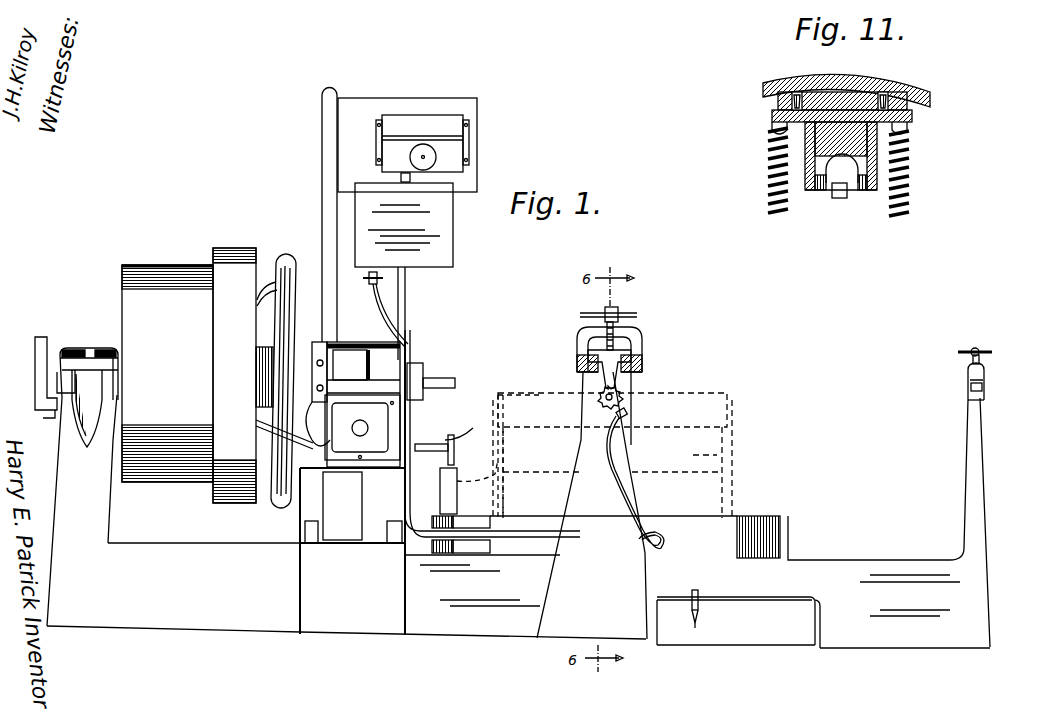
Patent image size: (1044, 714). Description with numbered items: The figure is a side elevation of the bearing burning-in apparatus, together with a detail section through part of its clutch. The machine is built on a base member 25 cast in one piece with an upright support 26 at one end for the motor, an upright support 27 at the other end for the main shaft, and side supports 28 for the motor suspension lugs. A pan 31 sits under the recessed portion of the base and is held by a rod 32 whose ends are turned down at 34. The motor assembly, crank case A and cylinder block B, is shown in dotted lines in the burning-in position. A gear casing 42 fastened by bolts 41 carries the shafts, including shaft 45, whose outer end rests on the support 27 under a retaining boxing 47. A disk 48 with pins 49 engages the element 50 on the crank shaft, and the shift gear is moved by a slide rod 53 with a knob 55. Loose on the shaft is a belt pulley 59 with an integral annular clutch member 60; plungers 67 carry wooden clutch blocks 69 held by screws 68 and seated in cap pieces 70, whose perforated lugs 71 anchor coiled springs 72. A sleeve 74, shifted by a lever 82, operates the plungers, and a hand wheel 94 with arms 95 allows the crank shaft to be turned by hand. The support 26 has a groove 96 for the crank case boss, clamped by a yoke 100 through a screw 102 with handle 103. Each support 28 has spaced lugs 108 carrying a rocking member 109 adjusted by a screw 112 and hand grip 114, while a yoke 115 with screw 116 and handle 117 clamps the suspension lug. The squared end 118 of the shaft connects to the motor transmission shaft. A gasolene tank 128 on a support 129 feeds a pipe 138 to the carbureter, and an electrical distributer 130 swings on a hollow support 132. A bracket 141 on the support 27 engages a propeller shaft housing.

In FIG. 1, the base member 25 is at (491, 620).
In FIG. 1, the upright support 26 is at (988, 503).
In FIG. 1, the upright support 27 is at (173, 510).
In FIG. 1, the support 28 is at (580, 570).
In FIG. 1, the pan 31 is at (757, 628).
In FIG. 1, the rod 32 is at (695, 589).
In FIG. 1, the turned-down ends of rod 34 is at (695, 626).
In FIG. 1, the bolts 41 is at (393, 541).
In FIG. 1, the gear casing 42 is at (293, 520).
In FIG. 1, the shaft 45 is at (306, 357).
In FIG. 1, the retaining boxing 47 is at (105, 348).
In FIG. 1, the disk 48 is at (440, 492).
In FIG. 1, the pins 49 is at (456, 475).
In FIG. 1, the element on crank shaft 50 is at (498, 457).
In FIG. 1, the slide rod 53 is at (415, 448).
In FIG. 1, the knob 55 is at (448, 441).
In FIG. 1, the belt pulley 59 is at (172, 266).
In FIG. 1, the annular clutch member 60 is at (228, 250).
In FIG. 11, the plunger 67 is at (858, 190).
In FIG. 11, the screws 68 is at (886, 94).
In FIG. 11, the wooden clutch block 69 is at (852, 92).
In FIG. 11, the cap piece 70 is at (820, 86).
In FIG. 11, the perforated lugs 71 is at (772, 119).
In FIG. 11, the coiled springs 72 is at (768, 182).
In FIG. 1, the sleeve 74 is at (257, 372).
In FIG. 1, the lever 82 is at (322, 160).
In FIG. 1, the hand wheel 94 is at (286, 258).
In FIG. 1, the arms 95 is at (262, 288).
In FIG. 1, the groove 96 is at (967, 395).
In FIG. 1, the yoke 100 is at (986, 362).
In FIG. 1, the screw 102 is at (968, 362).
In FIG. 1, the handle 103 is at (975, 349).
In FIG. 1, the spaced lugs 108 is at (588, 362).
In FIG. 1, the rocking member 109 is at (612, 360).
In FIG. 1, the screw 112 is at (624, 410).
In FIG. 1, the hand grip 114 is at (616, 397).
In FIG. 1, the yoke 115 is at (577, 349).
In FIG. 1, the screw 116 is at (614, 322).
In FIG. 1, the handle 117 is at (588, 313).
In FIG. 1, the squared end of shaft 118 is at (430, 380).
In FIG. 1, the gasolene tank 128 is at (440, 240).
In FIG. 1, the support 129 is at (408, 298).
In FIG. 1, the electrical distributer 130 is at (397, 123).
In FIG. 1, the support 132 is at (408, 323).
In FIG. 1, the pipe 138 is at (374, 309).
In FIG. 1, the bracket 141 is at (47, 388).
In FIG. 1, the crank case A is at (697, 495).
In FIG. 1, the cylinder block B is at (660, 442).